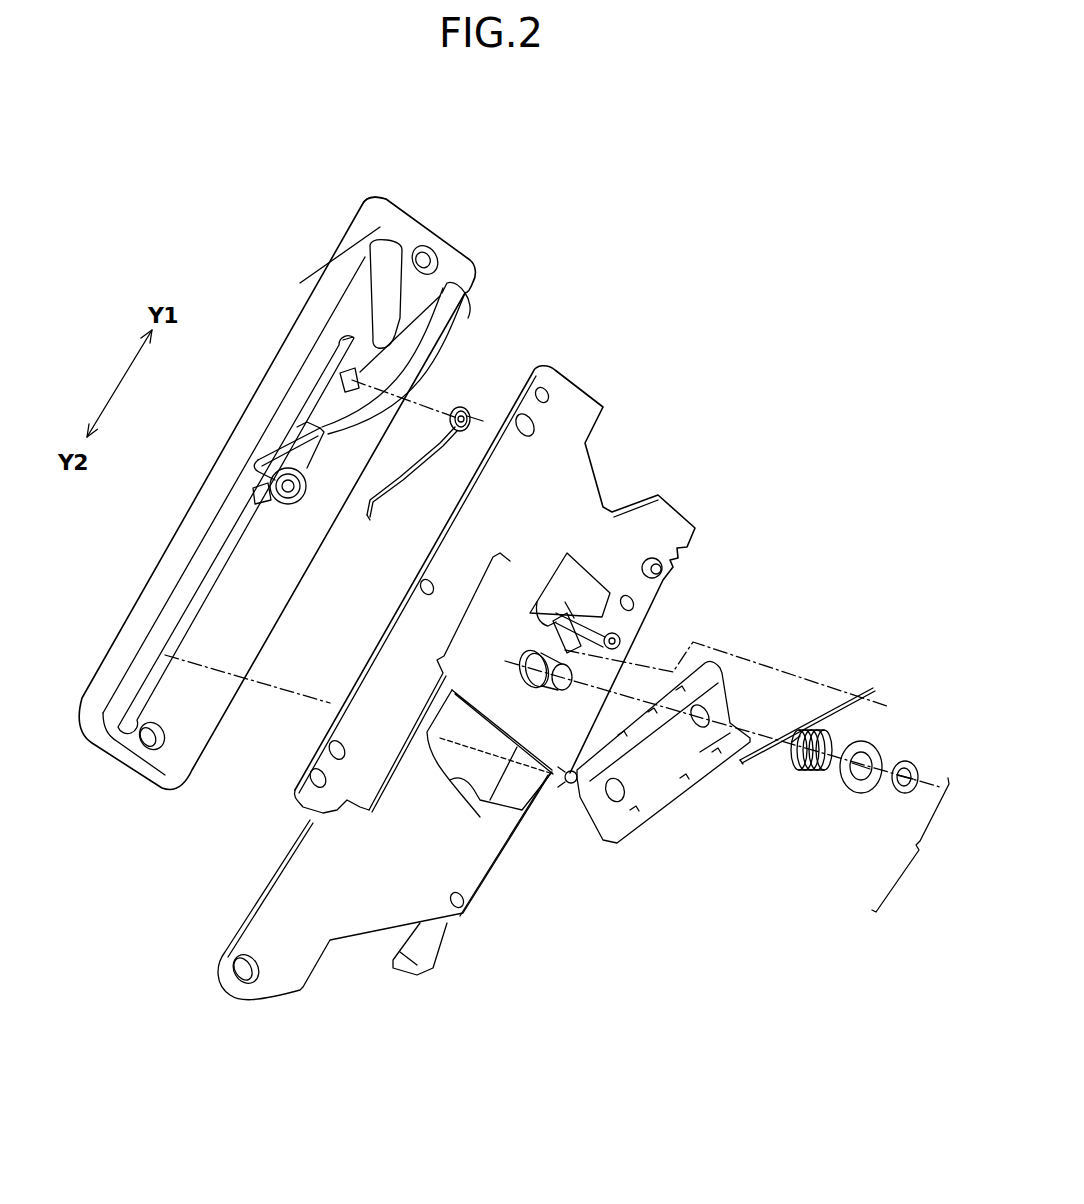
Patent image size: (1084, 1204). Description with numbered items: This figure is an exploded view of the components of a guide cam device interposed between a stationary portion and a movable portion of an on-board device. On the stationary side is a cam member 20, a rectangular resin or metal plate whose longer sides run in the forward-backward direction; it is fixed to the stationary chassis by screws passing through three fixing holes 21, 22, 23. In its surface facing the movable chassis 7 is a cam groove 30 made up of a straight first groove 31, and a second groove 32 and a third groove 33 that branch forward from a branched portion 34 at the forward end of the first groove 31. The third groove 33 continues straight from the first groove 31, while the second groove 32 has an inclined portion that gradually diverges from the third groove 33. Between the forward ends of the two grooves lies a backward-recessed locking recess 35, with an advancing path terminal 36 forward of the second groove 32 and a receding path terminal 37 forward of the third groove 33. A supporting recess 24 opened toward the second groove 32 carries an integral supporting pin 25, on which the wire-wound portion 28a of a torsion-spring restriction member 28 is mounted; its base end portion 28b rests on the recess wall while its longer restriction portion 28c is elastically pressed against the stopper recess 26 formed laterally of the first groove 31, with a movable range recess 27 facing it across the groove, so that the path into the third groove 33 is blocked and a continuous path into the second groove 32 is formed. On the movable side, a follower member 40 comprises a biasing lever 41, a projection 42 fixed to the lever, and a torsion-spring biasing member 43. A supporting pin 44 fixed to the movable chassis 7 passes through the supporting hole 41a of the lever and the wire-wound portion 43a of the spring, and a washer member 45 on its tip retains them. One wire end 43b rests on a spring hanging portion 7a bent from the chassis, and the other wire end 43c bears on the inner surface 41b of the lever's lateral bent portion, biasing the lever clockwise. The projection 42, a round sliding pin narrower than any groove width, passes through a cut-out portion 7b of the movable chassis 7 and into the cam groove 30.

The movable chassis 7 is at (290, 958).
The spring hanging portion 7a is at (625, 605).
The cut-out portion 7b is at (443, 760).
The cam member 20 is at (168, 563).
The fixing hole 21 is at (432, 250).
The fixing hole 22 is at (148, 742).
The fixing hole 23 is at (290, 500).
The supporting recess 24 is at (338, 393).
The supporting pin 25 is at (352, 380).
The stopper recess 26 is at (257, 462).
The movable range recess 27 is at (267, 480).
The restriction member 28 is at (455, 410).
The wire-wound portion 28a is at (460, 433).
The base end portion 28b is at (477, 413).
The restriction portion 28c is at (400, 480).
The cam groove 30 is at (178, 613).
The first groove 31 is at (207, 583).
The second groove 32 is at (443, 330).
The third groove 33 is at (353, 337).
The branched portion 34 is at (297, 427).
The locking recess 35 is at (383, 325).
The advancing path terminal 36 is at (470, 290).
The receding path terminal 37 is at (370, 199).
The follower member 40 is at (917, 845).
The biasing lever 41 is at (653, 802).
The supporting hole 41a is at (705, 712).
The inner surface of lateral bent portion 41b is at (642, 752).
The projection 42 is at (563, 777).
The biasing member 43 is at (795, 765).
The wire-wound portion 43a is at (808, 727).
The wire end 43b is at (870, 700).
The wire end 43c is at (745, 762).
The supporting pin 44 is at (540, 668).
The washer member 45 is at (935, 759).